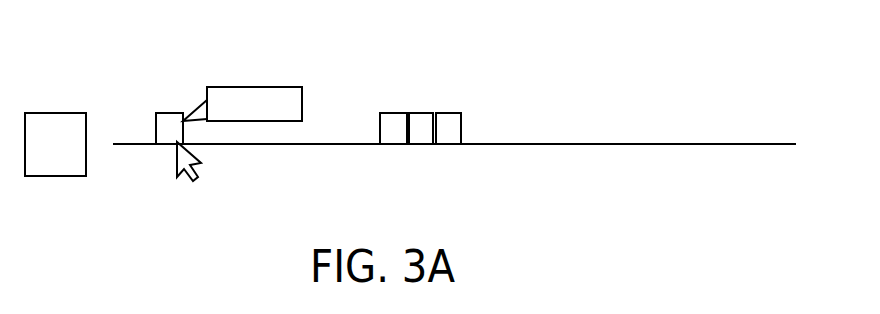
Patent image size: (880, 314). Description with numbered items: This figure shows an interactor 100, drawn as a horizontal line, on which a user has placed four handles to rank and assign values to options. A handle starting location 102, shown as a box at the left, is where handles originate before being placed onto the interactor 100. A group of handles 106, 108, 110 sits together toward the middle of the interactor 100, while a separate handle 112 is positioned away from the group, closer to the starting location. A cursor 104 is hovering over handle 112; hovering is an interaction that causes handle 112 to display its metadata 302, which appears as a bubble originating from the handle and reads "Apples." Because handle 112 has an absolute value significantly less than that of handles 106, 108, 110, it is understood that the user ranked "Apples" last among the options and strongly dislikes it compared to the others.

The interactor 100 is at (738, 143).
The handle starting location 102 is at (57, 113).
The cursor 104 is at (197, 173).
The handle 106 is at (392, 113).
The handle 108 is at (461, 128).
The handle 110 is at (421, 113).
The handle 112 is at (168, 113).
The metadata 302 is at (252, 87).